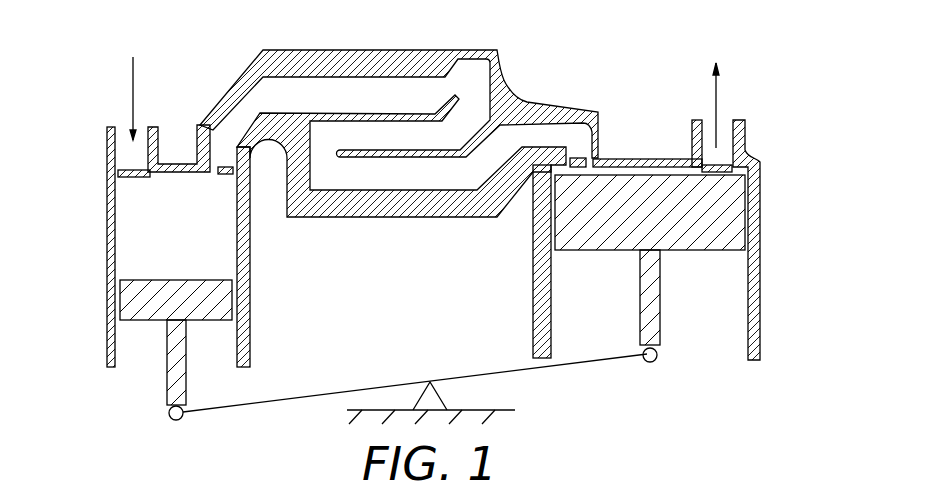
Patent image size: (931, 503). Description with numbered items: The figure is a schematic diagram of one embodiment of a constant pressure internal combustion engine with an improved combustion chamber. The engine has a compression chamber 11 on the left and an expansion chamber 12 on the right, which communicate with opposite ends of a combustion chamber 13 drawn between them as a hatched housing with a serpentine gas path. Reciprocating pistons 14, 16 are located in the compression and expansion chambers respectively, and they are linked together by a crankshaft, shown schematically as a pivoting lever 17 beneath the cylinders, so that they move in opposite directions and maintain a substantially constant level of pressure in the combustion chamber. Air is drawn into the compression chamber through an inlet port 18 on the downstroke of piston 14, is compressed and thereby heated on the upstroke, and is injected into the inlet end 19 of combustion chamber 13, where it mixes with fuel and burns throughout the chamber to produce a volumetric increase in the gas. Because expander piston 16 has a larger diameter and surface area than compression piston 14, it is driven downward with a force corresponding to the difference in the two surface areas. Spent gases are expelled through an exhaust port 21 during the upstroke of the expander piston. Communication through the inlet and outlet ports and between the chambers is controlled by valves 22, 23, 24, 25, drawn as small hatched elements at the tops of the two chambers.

The compression chamber 11 is at (132, 228).
The expansion chamber 12 is at (650, 173).
The combustion chamber 13 is at (365, 90).
The compression piston 14 is at (176, 280).
The expander piston 16 is at (732, 222).
The pivoting lever 17 is at (540, 368).
The inlet port 18 is at (127, 137).
The inlet end of combustion chamber 19 is at (221, 153).
The exhaust port 21 is at (722, 127).
The valve 22 is at (133, 167).
The valve 23 is at (222, 172).
The valve 24 is at (580, 163).
The valve 25 is at (717, 163).